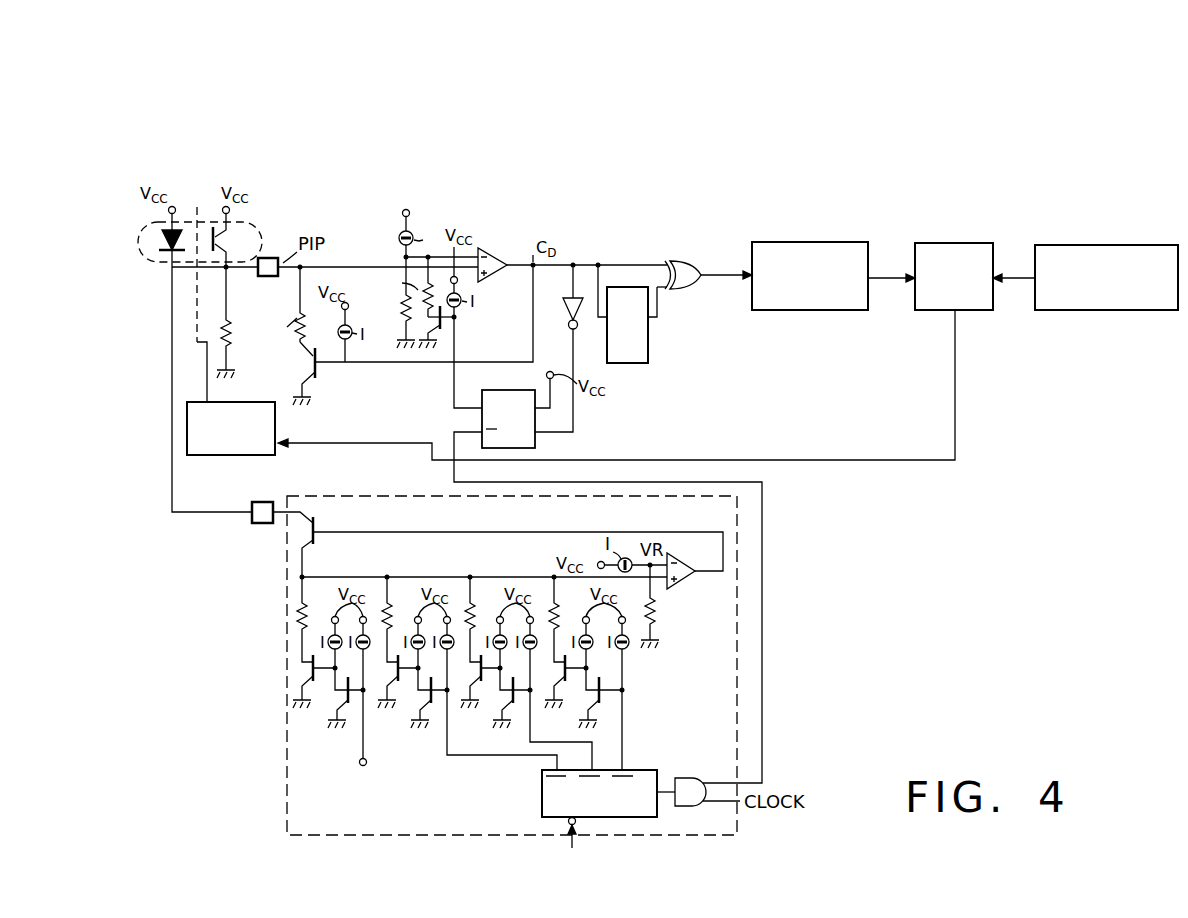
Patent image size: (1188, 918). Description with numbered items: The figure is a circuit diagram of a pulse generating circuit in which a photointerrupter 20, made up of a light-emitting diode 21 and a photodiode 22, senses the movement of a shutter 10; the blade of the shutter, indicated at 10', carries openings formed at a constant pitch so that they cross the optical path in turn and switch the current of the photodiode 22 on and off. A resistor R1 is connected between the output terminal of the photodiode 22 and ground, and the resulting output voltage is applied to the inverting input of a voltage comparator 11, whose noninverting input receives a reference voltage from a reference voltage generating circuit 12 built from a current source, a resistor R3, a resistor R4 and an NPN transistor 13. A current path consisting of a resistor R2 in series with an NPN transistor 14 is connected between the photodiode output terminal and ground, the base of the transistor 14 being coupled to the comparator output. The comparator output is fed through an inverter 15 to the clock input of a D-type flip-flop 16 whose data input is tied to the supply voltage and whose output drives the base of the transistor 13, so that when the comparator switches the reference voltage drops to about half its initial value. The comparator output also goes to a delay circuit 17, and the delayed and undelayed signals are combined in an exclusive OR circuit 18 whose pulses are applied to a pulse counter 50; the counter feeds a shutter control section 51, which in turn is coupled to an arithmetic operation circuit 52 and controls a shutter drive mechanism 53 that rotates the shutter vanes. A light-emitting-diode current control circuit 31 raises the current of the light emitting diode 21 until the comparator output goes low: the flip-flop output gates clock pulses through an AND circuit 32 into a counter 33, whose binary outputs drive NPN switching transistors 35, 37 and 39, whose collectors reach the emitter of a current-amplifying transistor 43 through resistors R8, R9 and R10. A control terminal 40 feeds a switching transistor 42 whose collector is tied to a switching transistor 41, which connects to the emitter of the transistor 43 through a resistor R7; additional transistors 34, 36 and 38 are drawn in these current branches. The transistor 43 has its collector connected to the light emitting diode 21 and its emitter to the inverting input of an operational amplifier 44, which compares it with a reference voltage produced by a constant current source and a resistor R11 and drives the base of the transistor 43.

The shutter 10 is at (210, 250).
The photo-interrupter output line 10' is at (195, 381).
The voltage comparator 11 is at (500, 251).
The reference voltage generating circuit 12 is at (397, 257).
The NPN transistor 13 is at (447, 323).
The NPN transistor 14 is at (300, 366).
The inverter 15 is at (567, 311).
The D-type flip-flop 16 is at (502, 394).
The delay circuit 17 is at (650, 348).
The exclusive OR circuit 18 is at (681, 262).
The photointerrupter 20 is at (147, 223).
The light-emitting diode 21 is at (158, 252).
The photodiode 22 is at (246, 233).
The light-emitting-diode current control circuit 31 is at (370, 494).
The AND circuit 32 is at (694, 770).
The counter 33 is at (541, 793).
The transistor 34 is at (390, 674).
The NPN switching transistor 35 is at (432, 708).
The transistor 36 is at (474, 674).
The NPN switching transistor 37 is at (515, 707).
The transistor 38 is at (557, 674).
The NPN switching transistor 39 is at (606, 708).
The control terminal 40 is at (365, 778).
The NPN switching transistor 41 is at (298, 669).
The NPN switching transistor 42 is at (335, 698).
The current-amplifying transistor 43 is at (319, 529).
The operational amplifier 44 is at (692, 567).
The pulse counter 50 is at (800, 312).
The shutter control section 51 is at (938, 312).
The arithmetic operation circuit 52 is at (1080, 312).
The shutter drive mechanism 53 is at (277, 424).
The resistor R1 is at (236, 322).
The resistor R2 is at (289, 311).
The resistor R3 is at (393, 302).
The resistor R4 is at (402, 287).
The resistor R7 is at (315, 619).
The resistor R8 is at (400, 619).
The resistor R9 is at (483, 619).
The resistor R10 is at (571, 619).
The resistor R11 is at (666, 606).